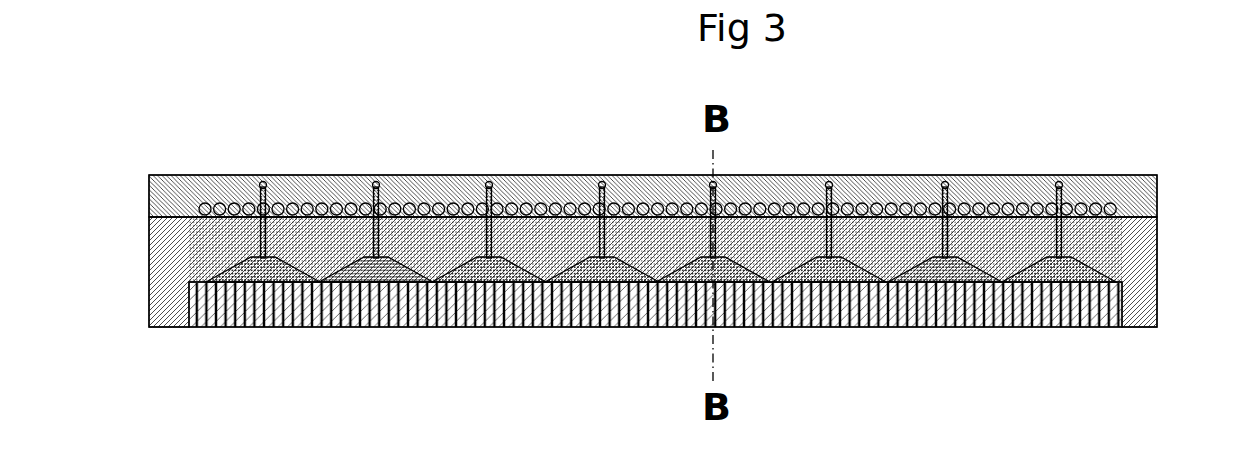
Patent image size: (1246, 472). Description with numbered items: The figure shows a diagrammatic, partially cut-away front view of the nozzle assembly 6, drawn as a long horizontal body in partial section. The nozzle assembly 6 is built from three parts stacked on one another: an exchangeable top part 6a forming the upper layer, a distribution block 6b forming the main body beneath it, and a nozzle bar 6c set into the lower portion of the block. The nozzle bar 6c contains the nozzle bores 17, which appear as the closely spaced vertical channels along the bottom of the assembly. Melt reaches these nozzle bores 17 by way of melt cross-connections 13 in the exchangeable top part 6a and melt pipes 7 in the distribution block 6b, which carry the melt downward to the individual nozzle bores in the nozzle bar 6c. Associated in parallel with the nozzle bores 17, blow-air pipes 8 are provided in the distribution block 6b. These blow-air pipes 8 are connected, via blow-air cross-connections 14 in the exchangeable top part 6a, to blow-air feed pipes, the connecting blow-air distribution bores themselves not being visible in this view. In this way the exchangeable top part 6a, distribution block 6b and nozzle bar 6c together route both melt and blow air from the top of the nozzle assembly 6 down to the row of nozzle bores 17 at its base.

The nozzle assembly 6 is at (1083, 158).
The exchangeable top part 6a is at (1147, 213).
The distribution block 6b is at (1147, 290).
The nozzle bar 6c is at (1065, 327).
The melt pipes 7 is at (842, 207).
The blow-air pipes 8 is at (526, 231).
The melt cross-connections 13 is at (823, 184).
The blow-air cross-connections 14 is at (560, 202).
The nozzle bores 17 is at (935, 327).